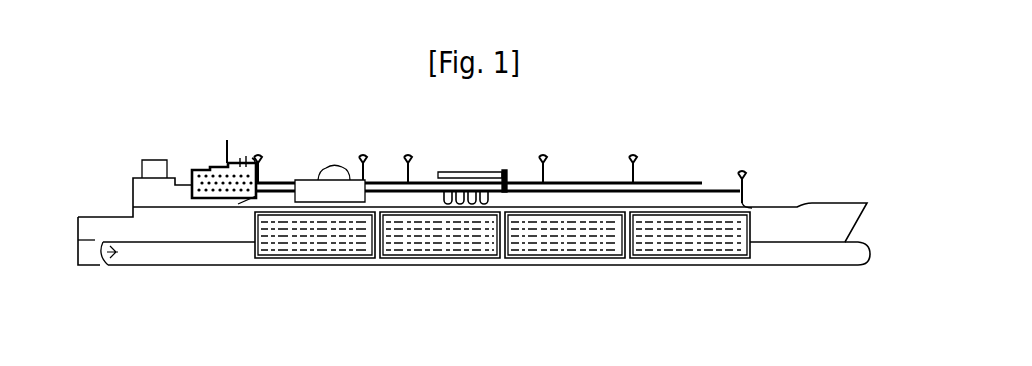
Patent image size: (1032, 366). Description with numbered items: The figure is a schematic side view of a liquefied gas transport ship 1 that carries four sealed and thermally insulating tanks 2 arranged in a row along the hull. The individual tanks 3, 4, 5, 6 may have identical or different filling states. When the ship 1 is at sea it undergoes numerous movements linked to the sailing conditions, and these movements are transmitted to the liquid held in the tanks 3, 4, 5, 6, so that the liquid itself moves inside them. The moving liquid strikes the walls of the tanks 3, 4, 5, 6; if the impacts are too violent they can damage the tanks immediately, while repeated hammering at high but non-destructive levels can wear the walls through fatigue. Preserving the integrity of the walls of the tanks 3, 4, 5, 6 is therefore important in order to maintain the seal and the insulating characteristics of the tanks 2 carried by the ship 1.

The ship 1 is at (263, 268).
The sealed and thermally insulating tanks 2 is at (502, 228).
The tank 3 is at (308, 221).
The tank 4 is at (430, 235).
The tank 5 is at (588, 230).
The tank 6 is at (686, 221).